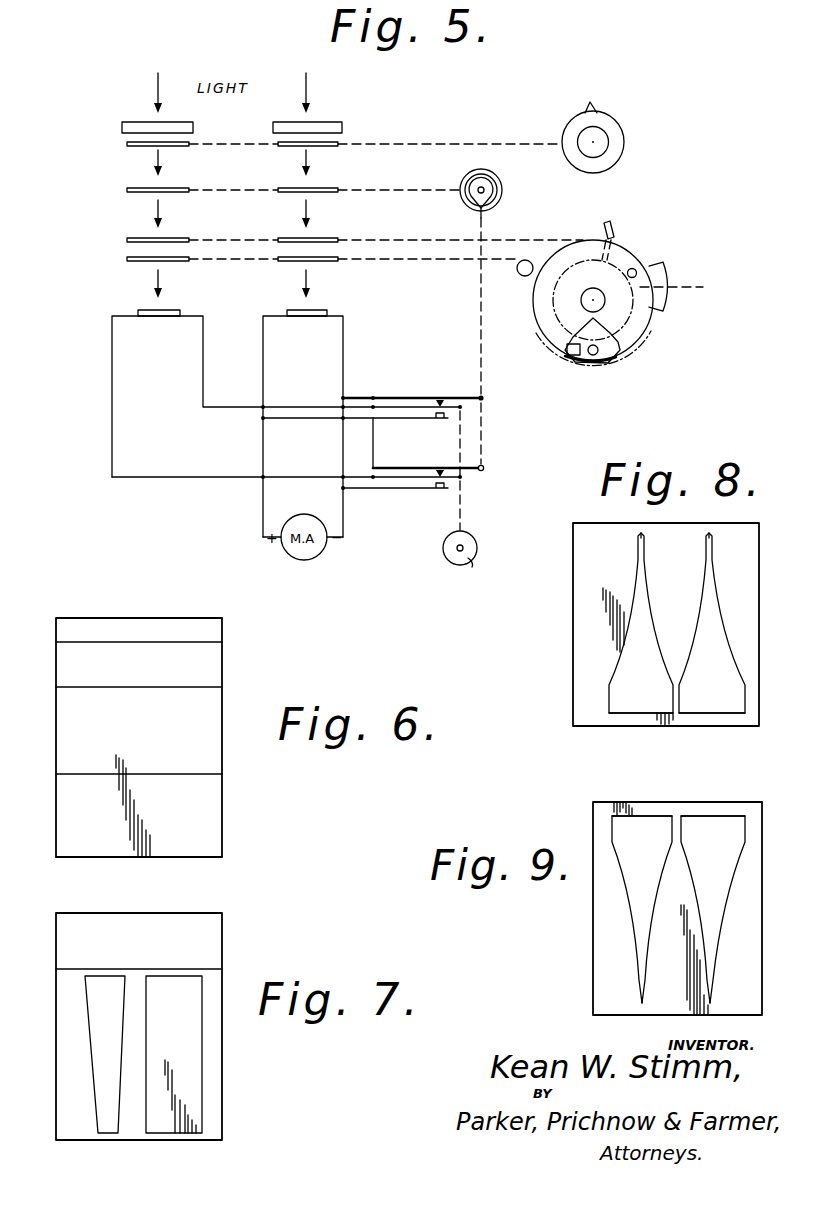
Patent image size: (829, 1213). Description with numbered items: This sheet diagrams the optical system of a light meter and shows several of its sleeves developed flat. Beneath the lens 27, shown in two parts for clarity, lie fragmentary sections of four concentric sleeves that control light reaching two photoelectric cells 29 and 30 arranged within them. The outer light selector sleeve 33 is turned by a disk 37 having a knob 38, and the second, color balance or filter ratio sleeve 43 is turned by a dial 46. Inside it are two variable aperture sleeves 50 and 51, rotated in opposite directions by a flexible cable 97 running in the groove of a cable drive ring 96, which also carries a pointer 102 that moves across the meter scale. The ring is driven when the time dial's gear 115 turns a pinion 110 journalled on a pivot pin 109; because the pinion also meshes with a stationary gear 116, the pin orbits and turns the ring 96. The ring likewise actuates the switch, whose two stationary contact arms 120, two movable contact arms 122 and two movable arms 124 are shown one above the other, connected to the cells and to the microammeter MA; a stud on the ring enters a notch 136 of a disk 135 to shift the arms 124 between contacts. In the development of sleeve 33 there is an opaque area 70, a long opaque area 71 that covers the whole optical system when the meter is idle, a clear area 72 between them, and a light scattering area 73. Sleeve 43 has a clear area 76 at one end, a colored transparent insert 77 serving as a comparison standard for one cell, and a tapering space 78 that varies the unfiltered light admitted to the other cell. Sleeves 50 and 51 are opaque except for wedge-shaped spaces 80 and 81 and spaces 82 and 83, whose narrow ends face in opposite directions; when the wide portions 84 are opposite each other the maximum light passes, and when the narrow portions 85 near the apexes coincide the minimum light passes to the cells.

In FIG. 5, the lens 27 is at (130, 121).
In FIG. 5, the light selector sleeve 33 is at (126, 146).
In FIG. 6, the light selector sleeve 33 is at (230, 762).
In FIG. 5, the color balance or filter ratio sleeve 43 is at (126, 193).
In FIG. 7, the color balance or filter ratio sleeve 43 is at (234, 1095).
In FIG. 5, the variable aperture sleeve 50 is at (126, 240).
In FIG. 8, the variable aperture sleeve 50 is at (565, 630).
In FIG. 5, the variable aperture sleeve 51 is at (126, 260).
In FIG. 9, the variable aperture sleeve 51 is at (583, 953).
In FIG. 5, the photoelectric cell 29 is at (153, 320).
In FIG. 5, the photoelectric cell 30 is at (285, 320).
In FIG. 5, the disk 37 is at (624, 120).
In FIG. 5, the knob or handle portion 38 is at (597, 107).
In FIG. 5, the dial 46 is at (498, 176).
In FIG. 5, the flexible cable 97 is at (506, 261).
In FIG. 5, the cable drive ring 96 is at (644, 317).
In FIG. 5, the pointer 102 is at (614, 228).
In FIG. 5, the gear 115 is at (693, 286).
In FIG. 5, the pivot pin 109 is at (560, 352).
In FIG. 5, the pinion 110 is at (618, 348).
In FIG. 5, the stationary gear 116 is at (562, 362).
In FIG. 5, the movable contact arm 122 is at (419, 399).
In FIG. 5, the movable contact arm 124 is at (393, 401).
In FIG. 5, the stationary contact arm 120 is at (382, 419).
In FIG. 5, the disk 135 is at (472, 541).
In FIG. 5, the notch 136 is at (468, 563).
In FIG. 6, the opaque area 70 is at (106, 628).
In FIG. 6, the clear or transparent area 72 is at (79, 661).
In FIG. 6, the opaque area 71 is at (78, 730).
In FIG. 6, the light scattering area 73 is at (79, 809).
In FIG. 7, the clear area 76 is at (122, 918).
In FIG. 7, the space 78 is at (100, 1073).
In FIG. 7, the transparent insert 77 is at (168, 1124).
In FIG. 8, the narrow portions 85 is at (705, 551).
In FIG. 9, the narrow portions 85 is at (708, 986).
In FIG. 8, the wedge-shaped space 80 is at (617, 659).
In FIG. 8, the wedge-shaped space 81 is at (690, 661).
In FIG. 8, the wide portions 84 is at (636, 703).
In FIG. 9, the wide portions 84 is at (642, 821).
In FIG. 9, the wedge-shaped space 82 is at (656, 886).
In FIG. 9, the wedge-shaped space 83 is at (726, 886).